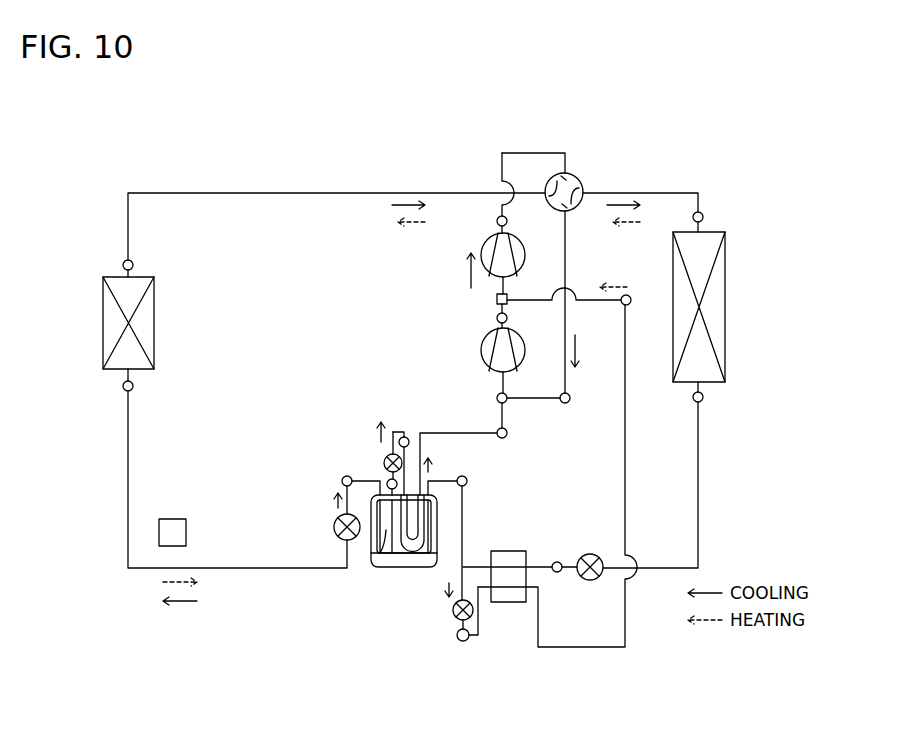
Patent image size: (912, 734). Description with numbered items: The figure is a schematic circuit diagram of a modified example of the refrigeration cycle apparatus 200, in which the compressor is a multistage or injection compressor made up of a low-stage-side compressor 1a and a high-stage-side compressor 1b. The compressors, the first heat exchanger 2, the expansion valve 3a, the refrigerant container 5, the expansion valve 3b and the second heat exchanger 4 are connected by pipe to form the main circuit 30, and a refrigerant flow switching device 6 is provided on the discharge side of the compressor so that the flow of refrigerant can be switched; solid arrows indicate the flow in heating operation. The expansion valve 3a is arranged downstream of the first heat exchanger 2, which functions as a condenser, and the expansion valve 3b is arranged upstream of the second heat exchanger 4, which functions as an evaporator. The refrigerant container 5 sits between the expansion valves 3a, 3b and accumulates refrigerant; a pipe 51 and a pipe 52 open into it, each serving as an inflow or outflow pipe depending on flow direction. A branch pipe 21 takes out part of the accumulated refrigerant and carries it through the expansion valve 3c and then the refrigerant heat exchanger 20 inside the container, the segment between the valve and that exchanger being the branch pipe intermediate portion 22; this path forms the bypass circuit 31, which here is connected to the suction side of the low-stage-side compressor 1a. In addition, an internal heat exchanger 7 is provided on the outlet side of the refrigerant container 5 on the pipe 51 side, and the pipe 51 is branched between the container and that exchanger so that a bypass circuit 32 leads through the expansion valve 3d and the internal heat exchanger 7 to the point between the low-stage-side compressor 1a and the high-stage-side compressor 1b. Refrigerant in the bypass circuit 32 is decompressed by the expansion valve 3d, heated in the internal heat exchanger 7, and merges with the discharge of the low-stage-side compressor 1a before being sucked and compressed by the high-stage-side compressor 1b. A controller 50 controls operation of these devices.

The refrigeration cycle apparatus 200 is at (128, 172).
The low-stage-side compressor 1a is at (484, 334).
The high-stage-side compressor 1b is at (481, 252).
The first heat exchanger 2 is at (726, 297).
The expansion valve (first pressure reducing device) 3a is at (596, 554).
The expansion valve (second pressure reducing device) 3b is at (334, 522).
The expansion valve (third pressure reducing device) 3c is at (386, 458).
The expansion valve (fourth pressure reducing device) 3d is at (455, 615).
The second heat exchanger 4 is at (155, 300).
The refrigerant container 5 is at (430, 567).
The refrigerant flow switching device 6 is at (584, 178).
The internal heat exchanger 7 is at (512, 551).
The refrigerant heat exchanger 20 is at (408, 568).
The branch pipe 21 is at (392, 560).
The branch pipe intermediate portion 22 is at (393, 432).
The main circuit 30 is at (706, 456).
The bypass circuit 31 is at (518, 431).
The bypass circuit 32 is at (589, 650).
The controller 50 is at (170, 519).
The pipe (first pipe) 51 is at (431, 541).
The pipe (second pipe) 52 is at (374, 548).